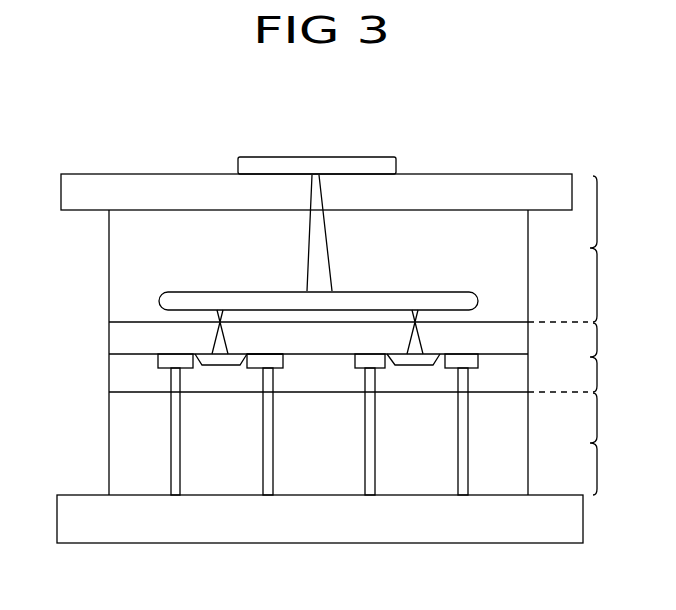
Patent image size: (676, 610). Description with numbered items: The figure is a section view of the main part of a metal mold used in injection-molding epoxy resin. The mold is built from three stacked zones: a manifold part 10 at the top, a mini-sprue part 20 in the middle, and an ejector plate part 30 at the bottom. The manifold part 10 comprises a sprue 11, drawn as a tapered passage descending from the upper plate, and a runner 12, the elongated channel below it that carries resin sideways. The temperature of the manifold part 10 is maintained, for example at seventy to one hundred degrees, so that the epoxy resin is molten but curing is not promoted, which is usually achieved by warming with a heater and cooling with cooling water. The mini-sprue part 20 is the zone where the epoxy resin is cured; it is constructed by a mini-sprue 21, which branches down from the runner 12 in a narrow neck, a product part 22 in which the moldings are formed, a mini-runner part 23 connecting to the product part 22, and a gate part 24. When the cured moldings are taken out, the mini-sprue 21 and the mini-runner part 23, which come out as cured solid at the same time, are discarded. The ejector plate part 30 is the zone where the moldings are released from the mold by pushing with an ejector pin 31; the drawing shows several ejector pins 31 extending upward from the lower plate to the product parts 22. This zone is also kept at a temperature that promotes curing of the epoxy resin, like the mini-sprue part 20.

The manifold part 10 is at (611, 249).
The sprue 11 is at (310, 256).
The runner 12 is at (163, 295).
The mini-sprue part 20 is at (611, 357).
The mini-sprue 21 is at (217, 343).
The product part 22 is at (158, 360).
The mini-runner part 23 is at (227, 365).
The gate part 24 is at (247, 354).
The ejector plate part 30 is at (611, 444).
The ejector pin 31 is at (172, 452).